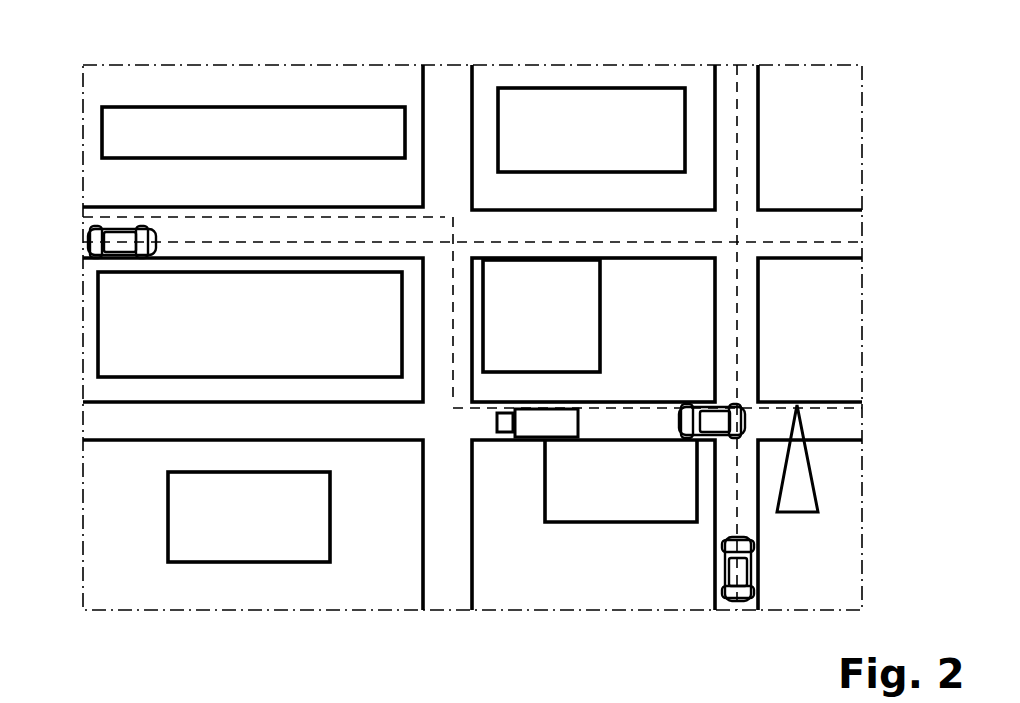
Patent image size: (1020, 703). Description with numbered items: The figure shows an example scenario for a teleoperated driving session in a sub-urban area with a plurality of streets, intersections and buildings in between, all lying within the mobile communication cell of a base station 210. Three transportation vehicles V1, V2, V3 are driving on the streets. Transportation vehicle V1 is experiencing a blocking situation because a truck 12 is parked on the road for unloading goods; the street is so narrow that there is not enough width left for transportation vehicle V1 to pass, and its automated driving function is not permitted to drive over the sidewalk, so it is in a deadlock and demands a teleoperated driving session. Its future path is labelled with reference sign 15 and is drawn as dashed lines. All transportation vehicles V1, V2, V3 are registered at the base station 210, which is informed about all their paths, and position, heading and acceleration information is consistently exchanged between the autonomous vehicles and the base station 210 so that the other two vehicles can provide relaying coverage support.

The future path 15 is at (442, 216).
The truck 12 is at (527, 422).
The base station 210 is at (800, 480).
The transportation vehicle V1 is at (688, 438).
The transportation vehicle V2 is at (737, 605).
The transportation vehicle V3 is at (83, 242).